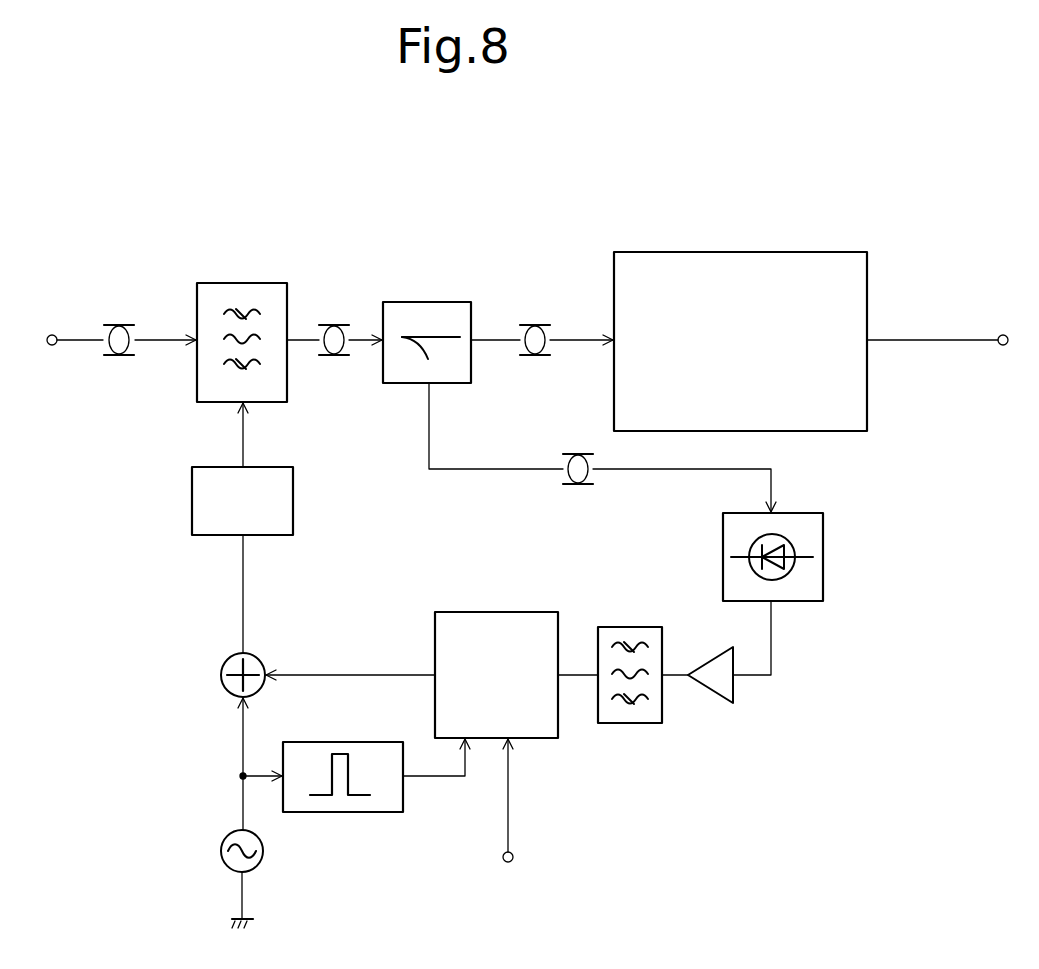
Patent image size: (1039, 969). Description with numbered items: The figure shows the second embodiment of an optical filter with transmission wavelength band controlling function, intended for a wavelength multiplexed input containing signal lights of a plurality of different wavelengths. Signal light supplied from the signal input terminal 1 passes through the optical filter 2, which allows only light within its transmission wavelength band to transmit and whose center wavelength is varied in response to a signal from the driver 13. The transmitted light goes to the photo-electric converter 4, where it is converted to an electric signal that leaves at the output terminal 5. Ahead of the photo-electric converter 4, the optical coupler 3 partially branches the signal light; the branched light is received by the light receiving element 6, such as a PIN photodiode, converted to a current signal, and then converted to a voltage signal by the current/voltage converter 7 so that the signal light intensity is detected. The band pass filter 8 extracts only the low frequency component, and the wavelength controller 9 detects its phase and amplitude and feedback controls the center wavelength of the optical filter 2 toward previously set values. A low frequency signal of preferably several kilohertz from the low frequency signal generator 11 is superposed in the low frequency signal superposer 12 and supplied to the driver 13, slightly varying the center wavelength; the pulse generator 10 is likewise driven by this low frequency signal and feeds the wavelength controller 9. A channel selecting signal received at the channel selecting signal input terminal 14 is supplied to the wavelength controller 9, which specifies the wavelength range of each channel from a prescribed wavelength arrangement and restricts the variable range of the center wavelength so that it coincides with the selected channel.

The signal input terminal 1 is at (51, 334).
The optical filter 2 is at (248, 283).
The optical coupler 3 is at (428, 302).
The photo-electric converter 4 is at (735, 252).
The electrical output terminal 5 is at (1003, 334).
The light receiving element 6 is at (823, 558).
The current/voltage converter 7 is at (713, 692).
The band pass filter 8 is at (632, 627).
The wavelength controller 9 is at (497, 612).
The pulse generator 10 is at (340, 812).
The low frequency signal generator 11 is at (221, 852).
The low frequency signal superposer 12 is at (221, 675).
The driver 13 is at (293, 497).
The channel selecting signal input terminal 14 is at (514, 857).